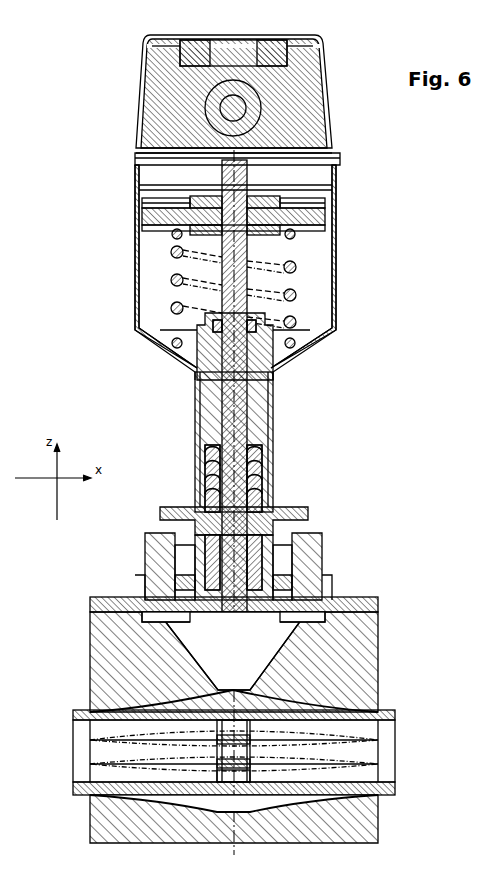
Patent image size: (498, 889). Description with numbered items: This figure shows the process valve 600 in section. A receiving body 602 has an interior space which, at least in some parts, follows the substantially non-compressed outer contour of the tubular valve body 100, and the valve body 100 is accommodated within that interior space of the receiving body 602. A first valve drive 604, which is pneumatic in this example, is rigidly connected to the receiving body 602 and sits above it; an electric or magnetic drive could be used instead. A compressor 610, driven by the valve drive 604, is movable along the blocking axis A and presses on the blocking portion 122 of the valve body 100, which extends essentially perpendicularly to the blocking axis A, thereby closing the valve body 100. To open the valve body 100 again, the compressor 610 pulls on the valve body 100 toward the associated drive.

The process valve 600 is at (86, 84).
The first valve drive 604 is at (331, 377).
The receiving body 602 is at (90, 646).
The compressor 610 is at (250, 676).
The valve body 100 is at (310, 688).
The blocking portion 122 is at (150, 692).
The blocking axis A is at (222, 430).